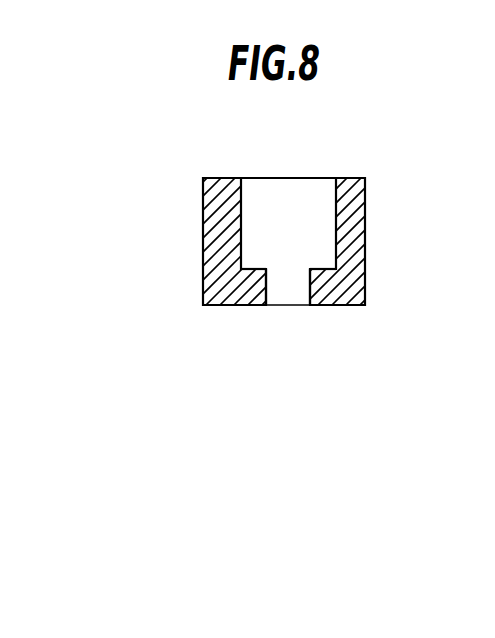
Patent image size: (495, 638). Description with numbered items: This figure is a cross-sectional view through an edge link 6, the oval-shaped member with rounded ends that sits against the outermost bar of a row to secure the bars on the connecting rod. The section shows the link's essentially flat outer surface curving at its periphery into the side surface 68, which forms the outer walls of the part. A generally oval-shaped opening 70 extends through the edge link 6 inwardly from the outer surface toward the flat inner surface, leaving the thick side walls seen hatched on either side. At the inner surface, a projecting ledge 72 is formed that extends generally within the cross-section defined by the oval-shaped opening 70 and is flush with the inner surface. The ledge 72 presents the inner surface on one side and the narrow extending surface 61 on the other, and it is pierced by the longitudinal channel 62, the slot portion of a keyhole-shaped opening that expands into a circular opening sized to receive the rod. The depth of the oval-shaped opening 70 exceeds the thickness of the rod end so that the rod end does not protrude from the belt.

The edge link 6 is at (280, 240).
The extending surface 61 is at (316, 256).
The longitudinal channel 62 is at (280, 308).
The side surface 68 is at (349, 237).
The oval-shaped opening 70 is at (298, 215).
The projecting ledge 72 is at (278, 289).